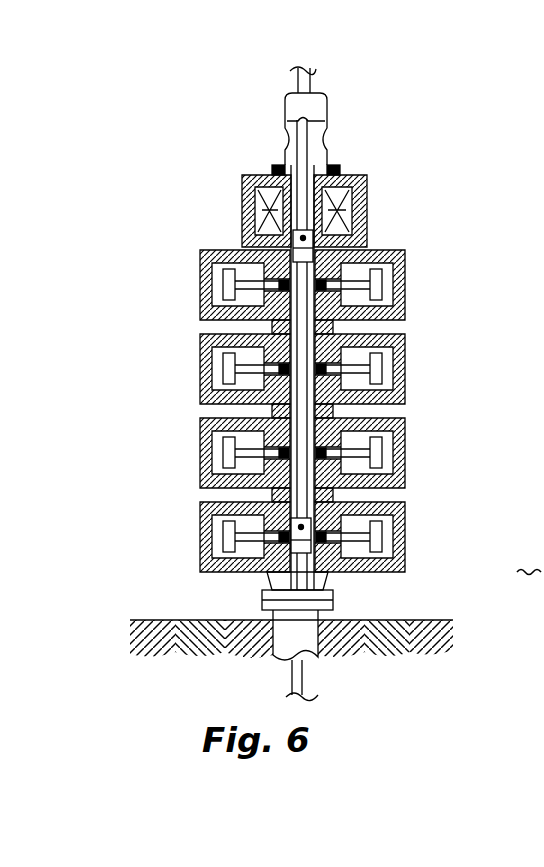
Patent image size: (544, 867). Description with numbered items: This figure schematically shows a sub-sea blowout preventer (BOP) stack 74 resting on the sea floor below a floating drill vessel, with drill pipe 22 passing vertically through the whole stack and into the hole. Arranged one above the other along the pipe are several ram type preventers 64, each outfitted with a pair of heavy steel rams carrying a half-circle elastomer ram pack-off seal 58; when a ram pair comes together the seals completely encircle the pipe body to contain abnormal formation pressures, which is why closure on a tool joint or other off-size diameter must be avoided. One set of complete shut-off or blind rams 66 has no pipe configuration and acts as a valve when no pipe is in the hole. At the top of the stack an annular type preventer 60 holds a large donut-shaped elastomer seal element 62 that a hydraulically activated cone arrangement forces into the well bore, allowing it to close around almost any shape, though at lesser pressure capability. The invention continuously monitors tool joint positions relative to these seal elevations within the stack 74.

The drill pipe 22 is at (314, 70).
The ram pack-off seal 58 is at (335, 322).
The annular type preventer 60 is at (243, 206).
The elastomer seal element 62 is at (274, 176).
The ram type preventer 64 is at (201, 283).
The blind ram 66 is at (385, 484).
The sub-sea blowout preventer stack 74 is at (412, 248).